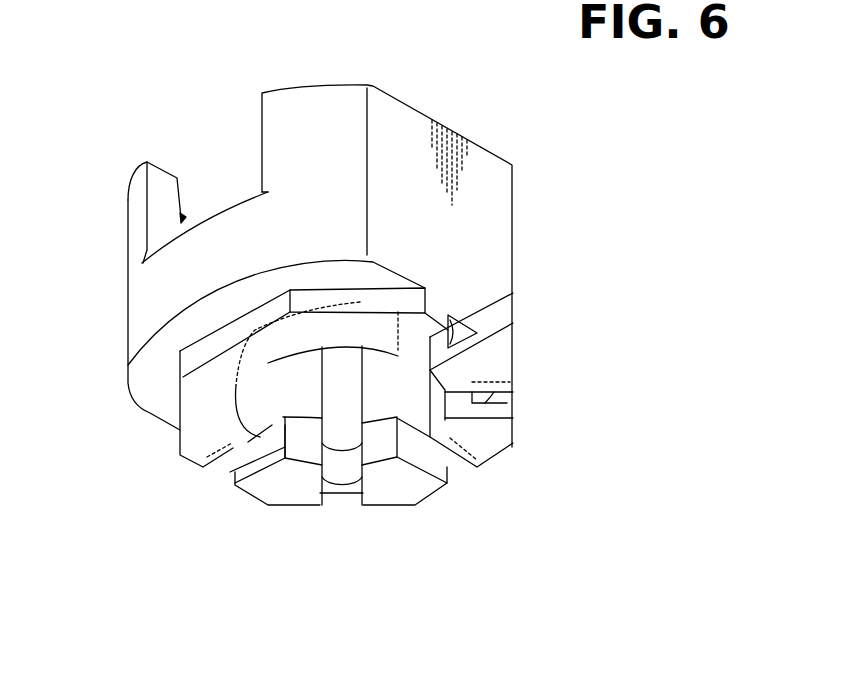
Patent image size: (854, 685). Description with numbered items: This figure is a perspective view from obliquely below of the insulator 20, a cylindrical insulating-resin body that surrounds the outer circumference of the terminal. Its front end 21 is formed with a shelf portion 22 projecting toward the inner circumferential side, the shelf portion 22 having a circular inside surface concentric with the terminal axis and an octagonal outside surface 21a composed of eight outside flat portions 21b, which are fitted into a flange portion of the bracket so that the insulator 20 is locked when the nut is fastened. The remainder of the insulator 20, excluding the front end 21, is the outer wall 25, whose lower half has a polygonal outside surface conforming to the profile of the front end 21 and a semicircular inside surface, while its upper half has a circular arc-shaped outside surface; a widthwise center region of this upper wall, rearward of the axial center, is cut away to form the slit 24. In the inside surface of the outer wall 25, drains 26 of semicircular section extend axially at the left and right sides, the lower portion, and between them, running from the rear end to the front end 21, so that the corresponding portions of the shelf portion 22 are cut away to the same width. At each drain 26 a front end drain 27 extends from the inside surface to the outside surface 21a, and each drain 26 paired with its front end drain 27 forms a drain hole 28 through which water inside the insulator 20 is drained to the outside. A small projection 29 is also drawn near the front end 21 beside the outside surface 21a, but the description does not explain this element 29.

The insulator 20 is at (458, 105).
The front end 21 is at (497, 369).
The outside surface 21a is at (343, 235).
The outside flat portion 21b is at (310, 288).
The shelf portion 22 is at (450, 424).
The slit 24 is at (160, 190).
The outer wall 25 is at (488, 150).
The drain 26 is at (331, 420).
The front end drain 27 is at (227, 463).
The drain hole 28 is at (424, 445).
The detent projection 29 is at (513, 293).